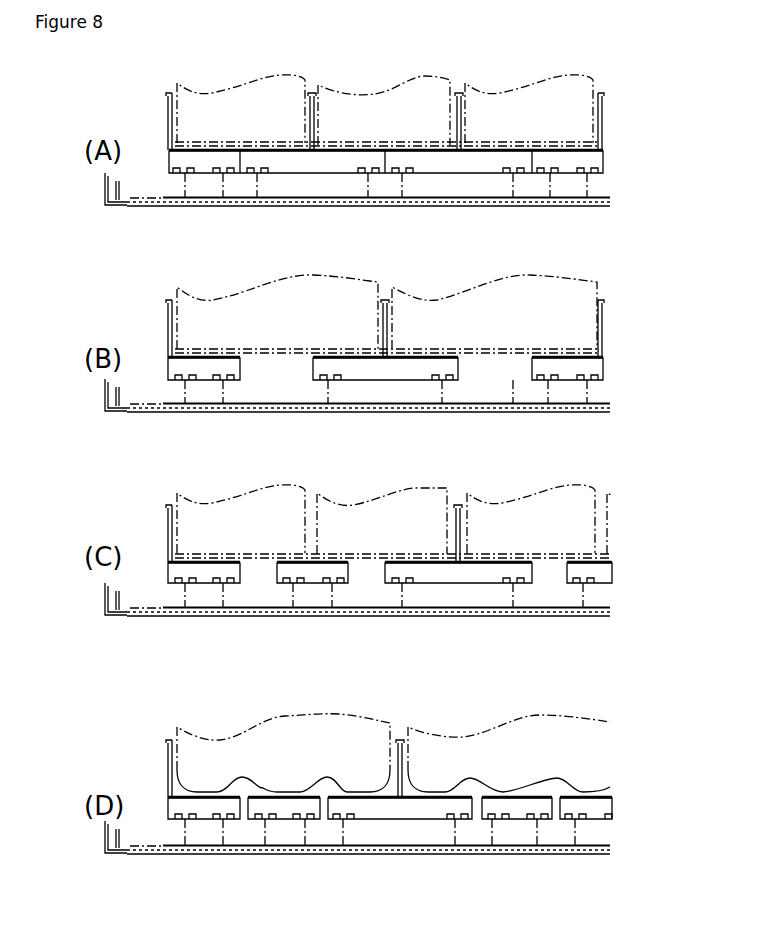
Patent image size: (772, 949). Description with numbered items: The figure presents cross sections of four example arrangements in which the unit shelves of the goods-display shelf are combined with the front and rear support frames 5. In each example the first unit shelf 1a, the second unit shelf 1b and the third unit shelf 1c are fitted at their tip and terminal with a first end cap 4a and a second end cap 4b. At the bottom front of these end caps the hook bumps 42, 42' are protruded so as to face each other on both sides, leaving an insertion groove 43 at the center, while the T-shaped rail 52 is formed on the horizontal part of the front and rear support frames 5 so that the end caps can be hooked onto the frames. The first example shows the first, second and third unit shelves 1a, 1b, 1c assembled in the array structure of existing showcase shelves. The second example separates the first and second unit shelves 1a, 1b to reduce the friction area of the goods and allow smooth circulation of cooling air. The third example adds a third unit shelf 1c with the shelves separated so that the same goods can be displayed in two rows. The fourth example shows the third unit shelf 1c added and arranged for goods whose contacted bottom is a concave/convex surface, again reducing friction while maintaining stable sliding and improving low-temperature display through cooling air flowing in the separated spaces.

The No.1 unit shelf 1a is at (196, 134).
The No.2 unit shelf 1b is at (412, 89).
The No.3 unit shelf 1c is at (325, 546).
The No.1 end cap 4a is at (172, 147).
The No.2 end cap 4b is at (330, 150).
The hook bump 42 is at (395, 506).
The hook bump 42' is at (382, 509).
The insertion groove 43 is at (133, 608).
The T-shaped rail 52 is at (130, 196).
The front and rear support frames 5 is at (368, 545).